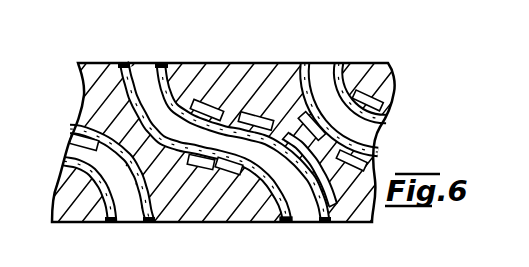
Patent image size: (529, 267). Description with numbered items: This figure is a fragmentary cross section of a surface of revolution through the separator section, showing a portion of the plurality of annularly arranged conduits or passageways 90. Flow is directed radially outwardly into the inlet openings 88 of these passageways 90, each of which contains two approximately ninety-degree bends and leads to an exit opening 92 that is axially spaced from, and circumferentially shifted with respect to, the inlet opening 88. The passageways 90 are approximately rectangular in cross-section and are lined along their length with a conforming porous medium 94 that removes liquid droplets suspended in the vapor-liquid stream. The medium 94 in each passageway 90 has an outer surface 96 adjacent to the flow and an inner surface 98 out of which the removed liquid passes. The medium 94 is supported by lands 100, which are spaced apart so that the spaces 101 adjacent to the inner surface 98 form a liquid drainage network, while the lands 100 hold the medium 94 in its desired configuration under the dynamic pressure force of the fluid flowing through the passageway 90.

The inlet opening 88 is at (304, 222).
The passageway 90 is at (88, 90).
The exit opening 92 is at (148, 72).
The porous medium 94 is at (247, 180).
The outer surface 96 is at (216, 128).
The inner surface 98 is at (286, 84).
The lands 100 is at (137, 105).
The spaces 101 is at (243, 117).